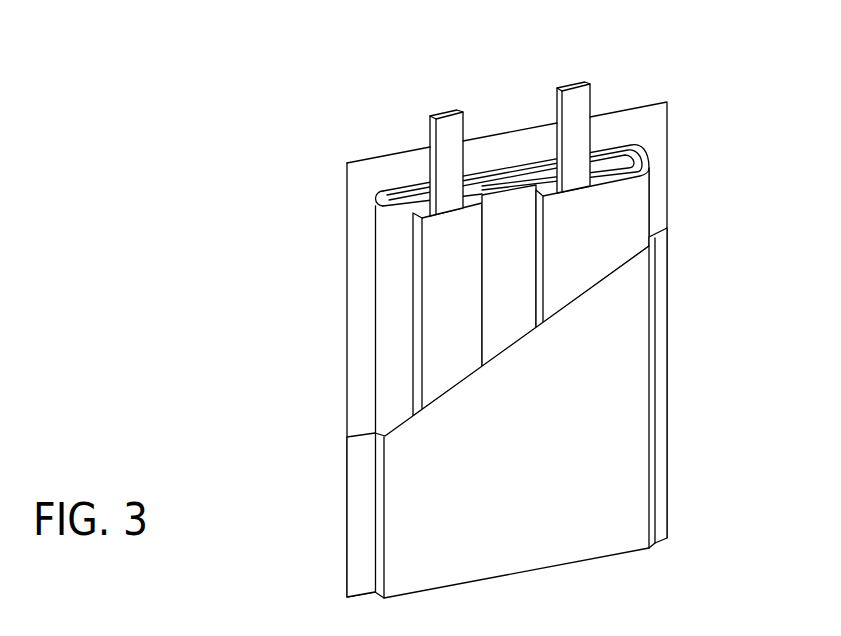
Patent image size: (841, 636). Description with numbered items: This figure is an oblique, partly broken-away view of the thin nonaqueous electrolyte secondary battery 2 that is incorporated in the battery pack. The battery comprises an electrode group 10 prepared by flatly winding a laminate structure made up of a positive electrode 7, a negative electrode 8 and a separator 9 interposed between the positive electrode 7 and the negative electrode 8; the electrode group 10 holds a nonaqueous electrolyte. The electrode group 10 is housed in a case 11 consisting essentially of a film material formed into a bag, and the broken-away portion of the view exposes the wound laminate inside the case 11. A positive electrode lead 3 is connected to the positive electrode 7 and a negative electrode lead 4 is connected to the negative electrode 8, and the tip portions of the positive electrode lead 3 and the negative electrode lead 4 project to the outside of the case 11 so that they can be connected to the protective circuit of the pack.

The thin nonaqueous electrolyte secondary battery 2 is at (692, 83).
The positive electrode lead 3 is at (581, 97).
The negative electrode lead 4 is at (451, 126).
The positive electrode 7 is at (570, 238).
The negative electrode 8 is at (447, 291).
The separator 9 is at (495, 332).
The electrode group 10 is at (444, 290).
The case 11 is at (667, 161).